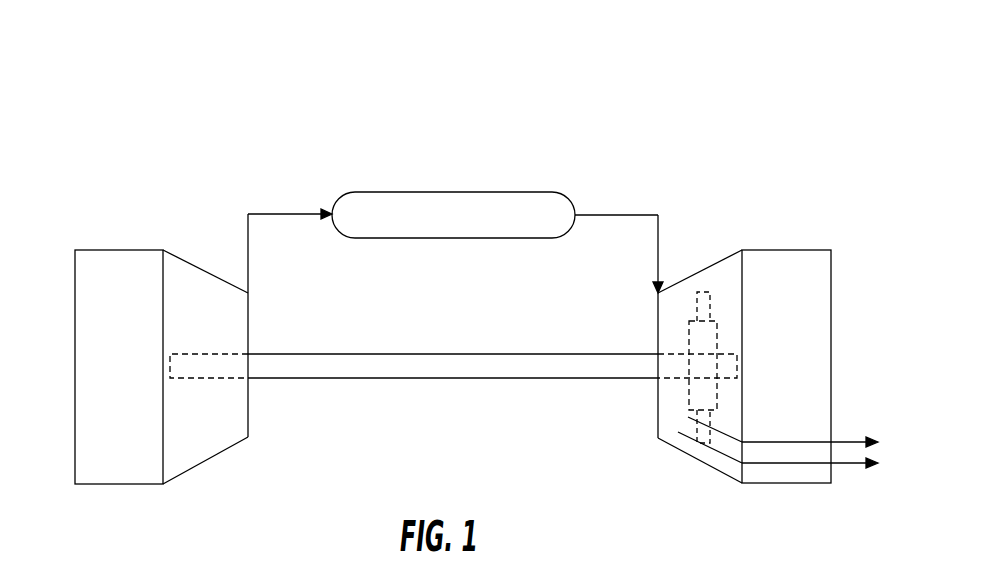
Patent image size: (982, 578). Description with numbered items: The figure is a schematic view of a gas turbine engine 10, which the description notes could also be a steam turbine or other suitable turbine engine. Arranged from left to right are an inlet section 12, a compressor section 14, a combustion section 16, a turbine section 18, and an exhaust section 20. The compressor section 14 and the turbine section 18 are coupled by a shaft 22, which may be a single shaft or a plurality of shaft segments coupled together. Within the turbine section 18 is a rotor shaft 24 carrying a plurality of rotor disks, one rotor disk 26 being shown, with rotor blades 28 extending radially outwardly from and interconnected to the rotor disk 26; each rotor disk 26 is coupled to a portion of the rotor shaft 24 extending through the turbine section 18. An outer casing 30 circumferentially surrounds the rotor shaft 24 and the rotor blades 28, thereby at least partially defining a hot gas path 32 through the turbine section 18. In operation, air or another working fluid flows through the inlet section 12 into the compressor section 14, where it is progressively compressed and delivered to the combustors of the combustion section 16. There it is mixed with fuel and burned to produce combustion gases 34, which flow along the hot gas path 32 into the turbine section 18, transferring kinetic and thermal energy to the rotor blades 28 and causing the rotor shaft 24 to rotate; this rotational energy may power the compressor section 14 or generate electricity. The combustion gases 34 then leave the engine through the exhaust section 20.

The gas turbine engine 10 is at (302, 132).
The inlet section 12 is at (93, 250).
The compressor section 14 is at (195, 267).
The combustion section 16 is at (510, 192).
The turbine section 18 is at (725, 250).
The exhaust section 20 is at (803, 250).
The shaft 22 is at (410, 379).
The rotor shaft 24 is at (738, 354).
The rotor disk 26 is at (689, 343).
The rotor blades 28 is at (698, 300).
The outer casing 30 is at (720, 474).
The hot gas path 32 is at (700, 444).
The combustion gases 34 is at (633, 216).